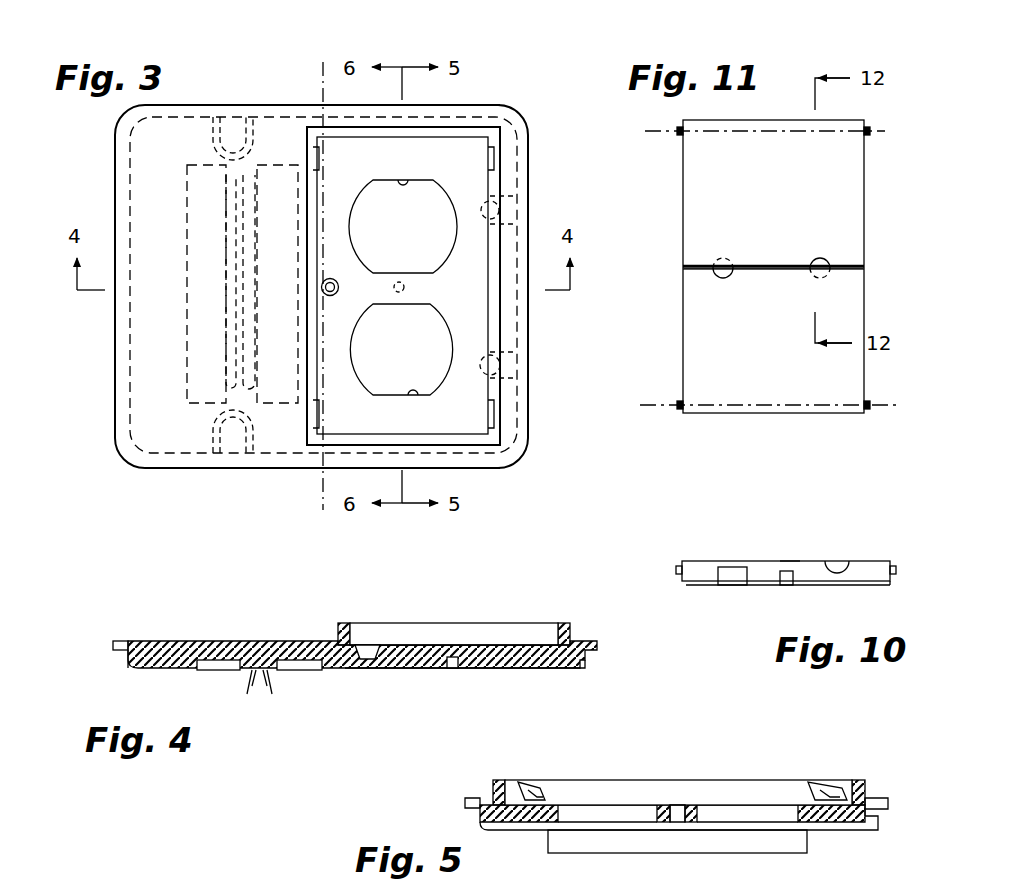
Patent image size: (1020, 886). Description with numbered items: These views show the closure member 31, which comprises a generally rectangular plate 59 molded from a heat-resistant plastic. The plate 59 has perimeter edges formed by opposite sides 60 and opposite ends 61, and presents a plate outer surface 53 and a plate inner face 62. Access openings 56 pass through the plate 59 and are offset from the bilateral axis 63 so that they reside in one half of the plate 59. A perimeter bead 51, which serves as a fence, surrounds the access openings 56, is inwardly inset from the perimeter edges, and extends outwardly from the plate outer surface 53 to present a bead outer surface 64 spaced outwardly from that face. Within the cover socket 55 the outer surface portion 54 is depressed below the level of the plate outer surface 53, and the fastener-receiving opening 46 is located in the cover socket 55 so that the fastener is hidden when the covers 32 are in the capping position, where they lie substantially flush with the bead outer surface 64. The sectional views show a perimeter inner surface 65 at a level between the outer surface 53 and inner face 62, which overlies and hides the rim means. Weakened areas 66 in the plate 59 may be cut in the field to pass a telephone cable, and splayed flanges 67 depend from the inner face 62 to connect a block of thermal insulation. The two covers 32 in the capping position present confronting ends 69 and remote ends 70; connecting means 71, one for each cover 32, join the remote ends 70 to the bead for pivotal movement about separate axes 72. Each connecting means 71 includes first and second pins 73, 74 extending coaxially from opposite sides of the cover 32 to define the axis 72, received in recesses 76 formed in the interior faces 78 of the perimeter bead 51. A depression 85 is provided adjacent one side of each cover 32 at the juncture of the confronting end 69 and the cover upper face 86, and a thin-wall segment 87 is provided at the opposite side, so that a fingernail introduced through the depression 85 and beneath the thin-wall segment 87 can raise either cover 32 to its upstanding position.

In FIG. 3, the closure member 31 is at (530, 106).
In FIG. 4, the closure member 31 is at (135, 630).
In FIG. 5, the closure member 31 is at (492, 775).
In FIG. 11, the cover 32 is at (845, 192).
In FIG. 10, the cover 32 is at (698, 553).
In FIG. 3, the fastener-receiving opening 46 is at (337, 285).
In FIG. 4, the fastener-receiving opening 46 is at (370, 660).
In FIG. 3, the perimeter bead 51 is at (460, 130).
In FIG. 4, the perimeter bead 51 is at (385, 623).
In FIG. 5, the perimeter bead 51 is at (600, 780).
In FIG. 3, the plate outer surface 53 is at (165, 158).
In FIG. 4, the plate outer surface 53 is at (283, 641).
In FIG. 5, the plate outer surface 53 is at (870, 802).
In FIG. 3, the outer surface portion 54 is at (472, 298).
In FIG. 4, the outer surface portion 54 is at (488, 645).
In FIG. 5, the outer surface portion 54 is at (672, 805).
In FIG. 3, the cover socket 55 is at (475, 410).
In FIG. 4, the cover socket 55 is at (512, 637).
In FIG. 3, the access opening 56 is at (403, 183).
In FIG. 5, the access opening 56 is at (720, 823).
In FIG. 3, the plate 59 is at (500, 206).
In FIG. 4, the plate 59 is at (200, 641).
In FIG. 5, the plate 59 is at (510, 822).
In FIG. 3, the side 60 is at (213, 105).
In FIG. 5, the side 60 is at (466, 801).
In FIG. 3, the end 61 is at (116, 372).
In FIG. 4, the end 61 is at (113, 644).
In FIG. 4, the plate inner face 62 is at (510, 670).
In FIG. 5, the plate inner face 62 is at (850, 823).
In FIG. 3, the bilateral axis 63 is at (323, 78).
In FIG. 3, the bead outer surface 64 is at (495, 335).
In FIG. 4, the bead outer surface 64 is at (440, 623).
In FIG. 5, the bead outer surface 64 is at (645, 780).
In FIG. 4, the perimeter inner surface 65 is at (128, 656).
In FIG. 5, the perimeter inner surface 65 is at (480, 816).
In FIG. 3, the weakened area 66 is at (237, 120).
In FIG. 3, the splayed flange 67 is at (240, 282).
In FIG. 4, the splayed flange 67 is at (267, 694).
In FIG. 5, the splayed flange 67 is at (608, 840).
In FIG. 11, the confronting end 69 is at (738, 265).
In FIG. 10, the confronting end 69 is at (866, 566).
In FIG. 11, the remote end 70 is at (790, 120).
In FIG. 11, the connecting means 71 is at (677, 127).
In FIG. 11, the axis 72 is at (876, 130).
In FIG. 10, the first pin 73 is at (896, 571).
In FIG. 10, the second pin 74 is at (676, 570).
In FIG. 5, the recess 76 is at (530, 790).
In FIG. 5, the interior face 78 is at (755, 790).
In FIG. 11, the depression 85 is at (822, 258).
In FIG. 10, the depression 85 is at (836, 585).
In FIG. 10, the cover upper face 86 is at (788, 561).
In FIG. 11, the thin-wall segment 87 is at (816, 276).
In FIG. 10, the thin-wall segment 87 is at (728, 585).